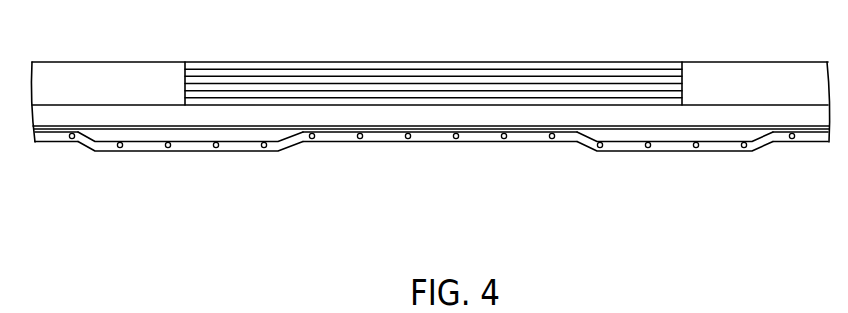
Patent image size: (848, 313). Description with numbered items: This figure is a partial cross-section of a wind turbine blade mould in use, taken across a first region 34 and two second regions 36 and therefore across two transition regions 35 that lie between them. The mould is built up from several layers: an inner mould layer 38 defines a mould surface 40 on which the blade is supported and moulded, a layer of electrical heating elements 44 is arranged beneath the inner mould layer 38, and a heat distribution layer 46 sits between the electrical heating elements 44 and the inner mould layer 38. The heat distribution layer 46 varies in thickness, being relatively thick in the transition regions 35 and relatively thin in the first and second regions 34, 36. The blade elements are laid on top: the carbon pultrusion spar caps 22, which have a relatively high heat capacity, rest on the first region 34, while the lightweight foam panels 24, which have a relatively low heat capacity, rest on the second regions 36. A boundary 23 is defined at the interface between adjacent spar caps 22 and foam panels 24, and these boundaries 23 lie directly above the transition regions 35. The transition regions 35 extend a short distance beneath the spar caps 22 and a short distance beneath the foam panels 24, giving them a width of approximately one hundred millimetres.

The spar cap 22 is at (490, 68).
The boundary 23 is at (185, 88).
The foam panel 24 is at (73, 71).
The first region 34 is at (427, 178).
The transition region 35 is at (188, 153).
The second region 36 is at (46, 147).
The inner mould layer 38 is at (742, 110).
The mould surface 40 is at (105, 105).
The electrical heating element 44 is at (264, 148).
The heat distribution layer 46 is at (142, 134).